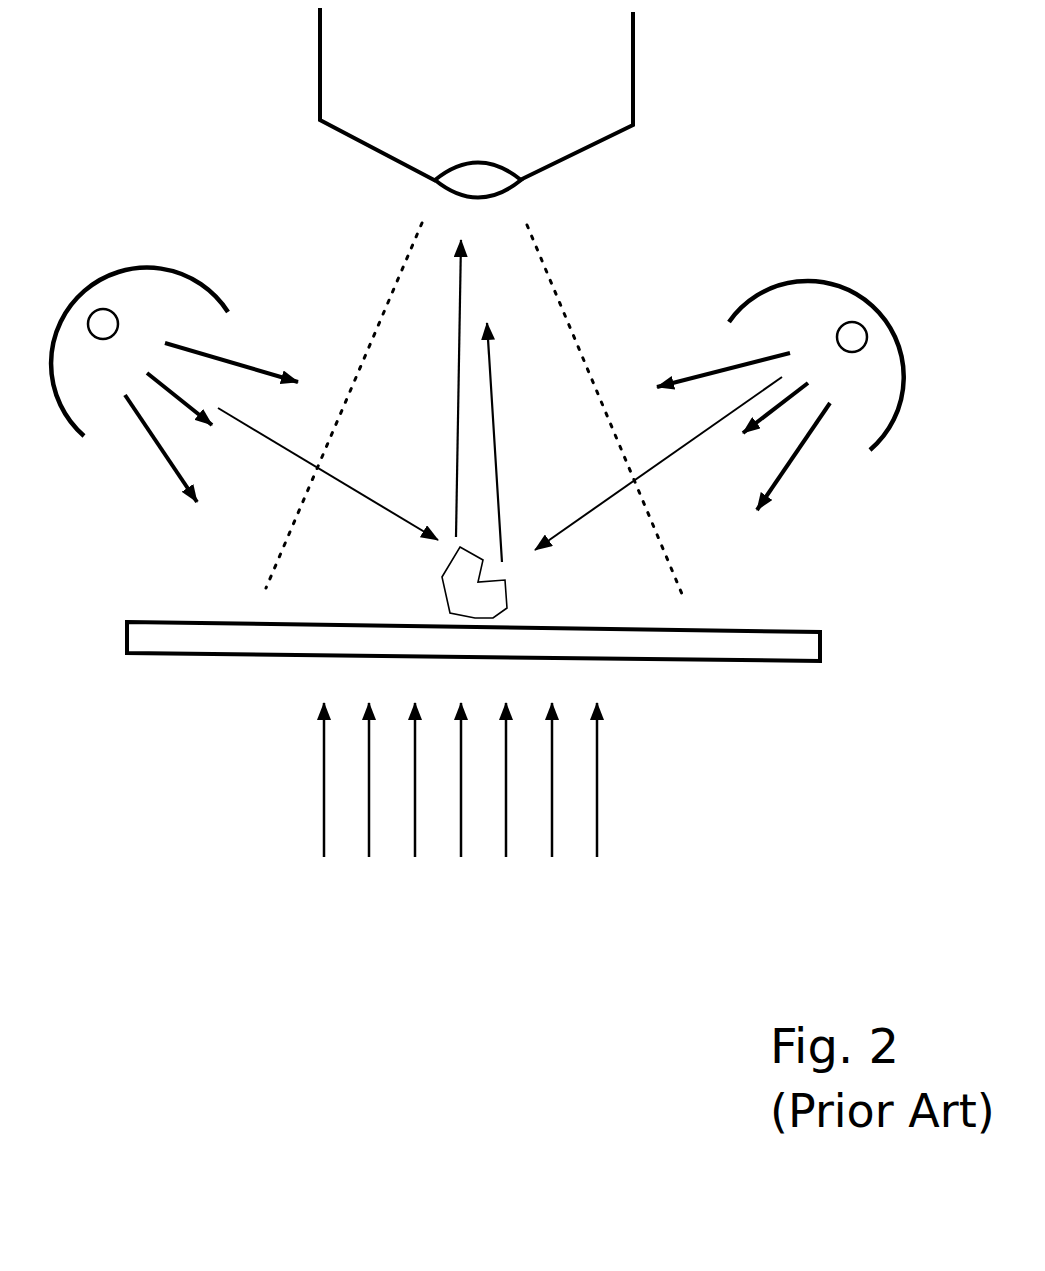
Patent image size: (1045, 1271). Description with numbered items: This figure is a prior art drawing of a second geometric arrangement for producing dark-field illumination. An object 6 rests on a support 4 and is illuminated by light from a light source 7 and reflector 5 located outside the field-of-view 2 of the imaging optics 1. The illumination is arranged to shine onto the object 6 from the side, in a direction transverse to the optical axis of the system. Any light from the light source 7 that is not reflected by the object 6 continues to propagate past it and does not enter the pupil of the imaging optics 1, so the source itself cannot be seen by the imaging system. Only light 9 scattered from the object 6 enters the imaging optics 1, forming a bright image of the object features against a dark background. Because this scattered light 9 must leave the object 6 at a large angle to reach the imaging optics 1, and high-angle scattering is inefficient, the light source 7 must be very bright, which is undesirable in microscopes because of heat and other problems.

The imaging optics 1 is at (621, 105).
The field-of-view 2 is at (567, 318).
The support 4 is at (789, 642).
The reflector 5 is at (127, 272).
The object 6 is at (495, 597).
The light source 7 is at (110, 310).
The light 9 is at (455, 450).